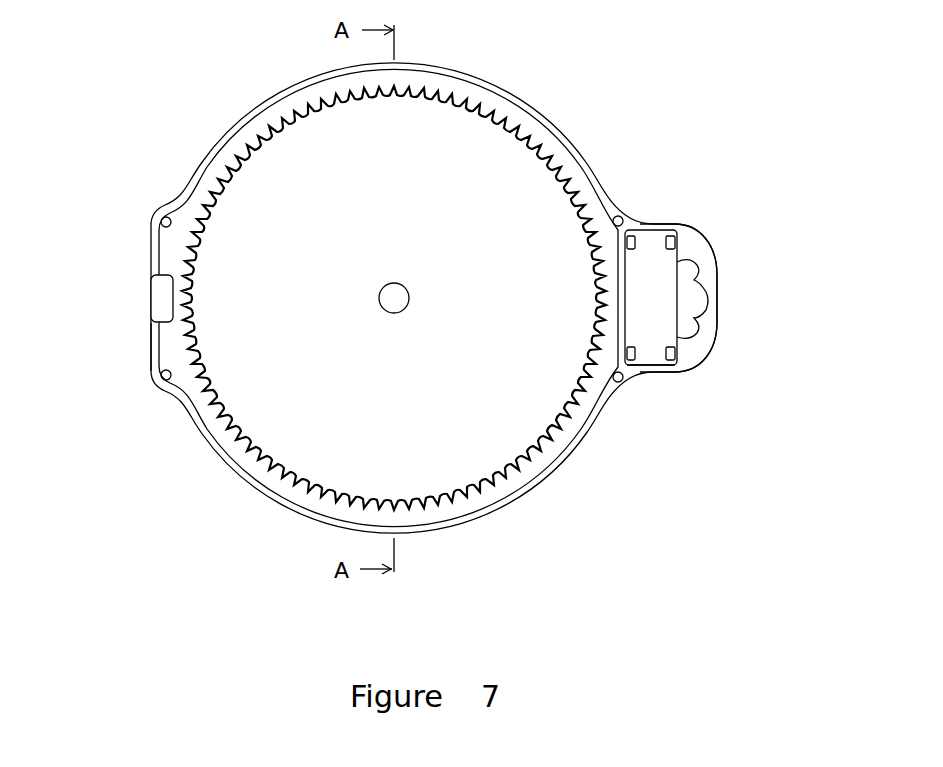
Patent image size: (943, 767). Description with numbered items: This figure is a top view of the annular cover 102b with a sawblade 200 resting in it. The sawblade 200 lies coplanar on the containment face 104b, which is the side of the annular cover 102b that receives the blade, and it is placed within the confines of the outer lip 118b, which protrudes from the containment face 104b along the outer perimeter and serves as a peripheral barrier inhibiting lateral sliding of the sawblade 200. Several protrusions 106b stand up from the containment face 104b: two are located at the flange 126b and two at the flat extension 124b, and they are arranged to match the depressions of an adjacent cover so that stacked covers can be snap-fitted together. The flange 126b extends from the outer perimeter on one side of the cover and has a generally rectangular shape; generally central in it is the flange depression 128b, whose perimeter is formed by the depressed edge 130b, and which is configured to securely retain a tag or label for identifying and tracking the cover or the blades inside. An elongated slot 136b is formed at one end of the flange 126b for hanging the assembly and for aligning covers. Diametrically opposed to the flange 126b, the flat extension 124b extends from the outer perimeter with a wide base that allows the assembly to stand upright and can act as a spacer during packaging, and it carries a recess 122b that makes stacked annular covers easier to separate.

The annular cover 102b is at (675, 84).
The containment face 104b is at (512, 110).
The outer lip 118b is at (420, 64).
The protrusion 106b is at (165, 210).
The recess 122b is at (163, 297).
The flat extension 124b is at (163, 350).
The flange 126b is at (712, 331).
The flange depression 128b is at (650, 232).
The depressed edge 130b is at (650, 362).
The elongated slot 136b is at (697, 277).
The sawblade 200 is at (414, 393).